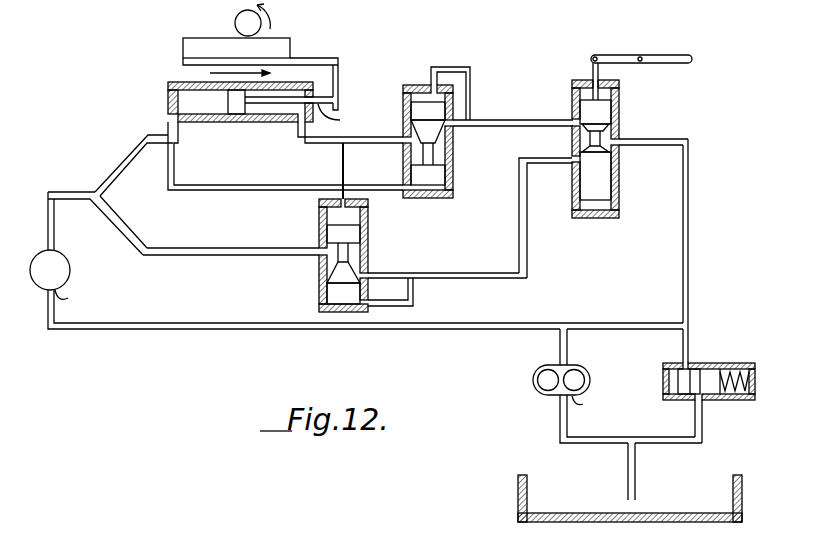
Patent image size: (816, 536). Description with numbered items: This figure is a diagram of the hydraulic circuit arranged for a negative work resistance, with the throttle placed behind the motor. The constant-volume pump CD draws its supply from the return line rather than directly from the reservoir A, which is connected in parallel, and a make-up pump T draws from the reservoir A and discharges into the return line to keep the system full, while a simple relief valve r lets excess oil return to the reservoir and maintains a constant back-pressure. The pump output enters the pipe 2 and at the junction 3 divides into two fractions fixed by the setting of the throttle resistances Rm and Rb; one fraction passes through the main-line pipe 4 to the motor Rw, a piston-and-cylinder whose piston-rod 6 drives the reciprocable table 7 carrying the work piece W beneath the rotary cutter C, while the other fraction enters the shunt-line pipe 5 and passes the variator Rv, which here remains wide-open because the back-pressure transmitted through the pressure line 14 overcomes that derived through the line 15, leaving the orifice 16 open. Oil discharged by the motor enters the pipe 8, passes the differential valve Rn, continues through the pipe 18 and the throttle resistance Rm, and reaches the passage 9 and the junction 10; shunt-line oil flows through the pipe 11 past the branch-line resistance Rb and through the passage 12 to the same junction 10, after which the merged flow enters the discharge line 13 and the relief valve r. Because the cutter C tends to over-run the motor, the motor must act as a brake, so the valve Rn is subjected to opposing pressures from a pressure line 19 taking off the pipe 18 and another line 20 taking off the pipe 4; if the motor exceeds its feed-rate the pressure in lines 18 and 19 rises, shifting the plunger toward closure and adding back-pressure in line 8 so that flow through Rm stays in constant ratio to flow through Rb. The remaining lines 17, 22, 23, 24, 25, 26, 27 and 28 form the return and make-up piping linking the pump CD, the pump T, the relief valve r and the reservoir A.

The pipe 2 is at (46, 228).
The junction 3 is at (102, 197).
The main-line pipe 4 is at (127, 155).
The shunt-line pipe 5 is at (130, 247).
The piston-rod 6 is at (335, 117).
The reciprocable table 7 is at (315, 60).
The pipe 8 is at (321, 143).
The passage 9 is at (577, 122).
The junction 10 is at (614, 140).
The pipe 11 is at (400, 281).
The passage 12 is at (568, 165).
The discharge line 13 is at (676, 142).
The pressure line 14 is at (341, 172).
The pressure line 15 is at (403, 306).
The orifice 16 is at (313, 260).
The pump return pipe 17 is at (220, 329).
The pipe 18 is at (519, 118).
The pressure line 19 is at (466, 68).
The pressure line 20 is at (256, 192).
The pipe to pump T 22 is at (557, 332).
The pipe junction 23 is at (680, 323).
The pump inlet pipe 24 is at (568, 350).
The pipe to relief valve r 25 is at (680, 350).
The pump outlet pipe 26 is at (557, 418).
The relief valve outlet pipe 27 is at (704, 420).
The drain pipe to tank 28 is at (626, 474).
The work piece W is at (183, 51).
The rotary cutter C is at (252, 20).
The motor Rw is at (259, 132).
The differential valve Rn is at (457, 147).
The throttle resistance Rm is at (632, 136).
The branch-line resistance Rb is at (595, 173).
The variator Rv is at (372, 257).
The constant-volume pump CD is at (65, 276).
The make-up pump T is at (530, 380).
The relief valve r is at (740, 366).
The reservoir A is at (517, 497).